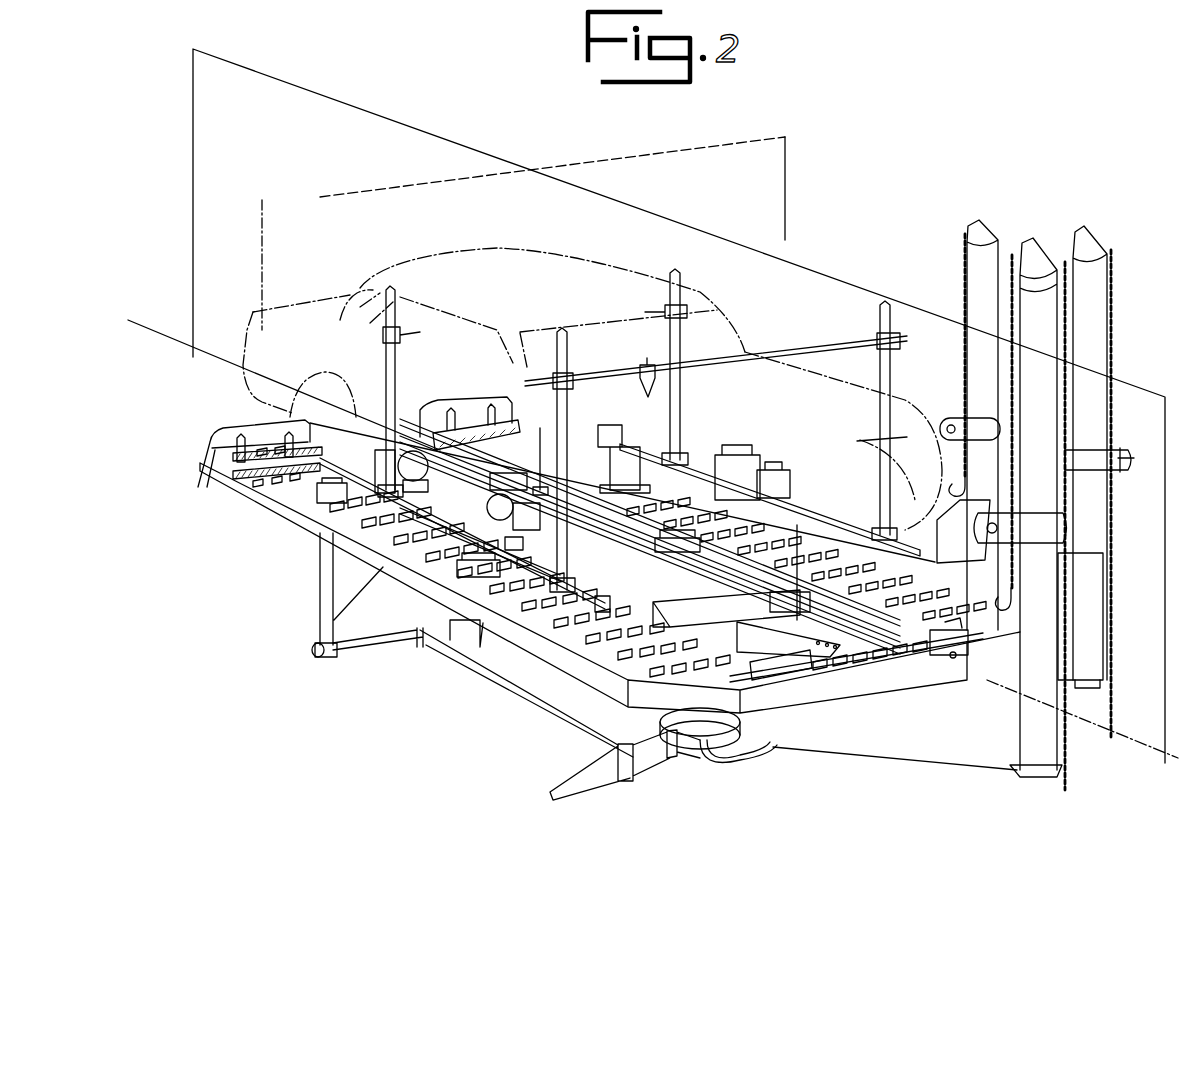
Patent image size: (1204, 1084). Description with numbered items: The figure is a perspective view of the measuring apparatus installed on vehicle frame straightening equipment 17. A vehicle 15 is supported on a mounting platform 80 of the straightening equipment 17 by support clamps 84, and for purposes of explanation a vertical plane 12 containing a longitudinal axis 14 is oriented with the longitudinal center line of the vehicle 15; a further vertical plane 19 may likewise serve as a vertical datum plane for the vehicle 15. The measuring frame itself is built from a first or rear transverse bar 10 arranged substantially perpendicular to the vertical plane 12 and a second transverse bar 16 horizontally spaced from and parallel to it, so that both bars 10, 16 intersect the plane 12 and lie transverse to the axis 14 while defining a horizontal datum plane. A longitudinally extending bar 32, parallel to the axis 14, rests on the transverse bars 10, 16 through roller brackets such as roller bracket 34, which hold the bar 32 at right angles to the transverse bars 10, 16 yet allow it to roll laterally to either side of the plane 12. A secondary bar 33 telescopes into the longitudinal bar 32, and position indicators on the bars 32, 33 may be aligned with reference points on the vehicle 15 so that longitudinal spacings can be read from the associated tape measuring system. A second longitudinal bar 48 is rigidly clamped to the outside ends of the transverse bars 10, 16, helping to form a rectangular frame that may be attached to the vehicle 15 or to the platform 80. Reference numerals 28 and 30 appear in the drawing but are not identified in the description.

The first transverse bar 10 is at (328, 494).
The vertical plane 12 is at (418, 152).
The longitudinal axis 14 is at (158, 330).
The vehicle 15 is at (446, 255).
The second transverse bar 16 is at (457, 570).
The frame straightening equipment 17 is at (558, 667).
The vertical plane 19 is at (508, 210).
The rail 28 is at (507, 527).
The clamp 30 is at (767, 485).
The longitudinal bar 32 is at (607, 515).
The secondary bar 33 is at (713, 573).
The roller bracket 34 is at (703, 546).
The second longitudinal bar 48 is at (817, 505).
The platform 80 is at (540, 620).
The support clamp 84 is at (393, 457).